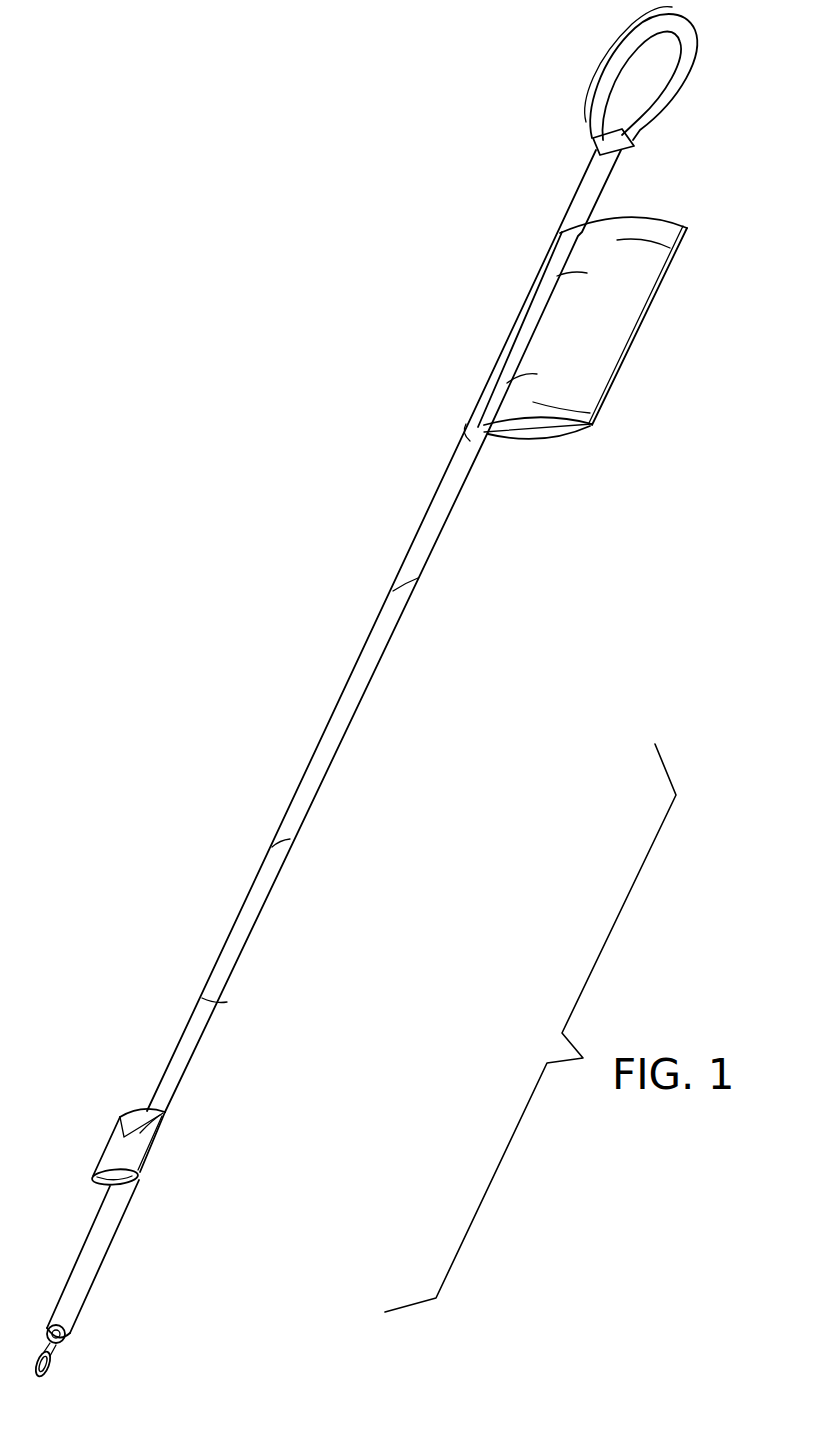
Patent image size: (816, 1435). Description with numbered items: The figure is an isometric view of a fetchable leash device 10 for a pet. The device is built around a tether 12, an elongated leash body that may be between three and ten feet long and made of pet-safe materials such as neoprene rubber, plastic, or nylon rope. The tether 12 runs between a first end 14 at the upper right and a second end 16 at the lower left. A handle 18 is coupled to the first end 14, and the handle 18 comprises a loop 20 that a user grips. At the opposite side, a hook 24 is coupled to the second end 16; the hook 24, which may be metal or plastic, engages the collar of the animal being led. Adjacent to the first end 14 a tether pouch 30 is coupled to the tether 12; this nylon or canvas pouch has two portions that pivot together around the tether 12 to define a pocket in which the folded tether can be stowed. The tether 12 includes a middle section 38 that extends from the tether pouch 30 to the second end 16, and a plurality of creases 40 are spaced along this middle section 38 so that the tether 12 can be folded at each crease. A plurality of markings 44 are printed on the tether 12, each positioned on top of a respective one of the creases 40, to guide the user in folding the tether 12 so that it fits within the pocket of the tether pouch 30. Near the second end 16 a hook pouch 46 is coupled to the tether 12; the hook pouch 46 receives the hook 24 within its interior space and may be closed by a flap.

The fetchable leash device 10 is at (266, 232).
The tether 12 is at (332, 767).
The first end 14 is at (600, 152).
The second end 16 is at (48, 1320).
The handle 18 is at (706, 101).
The loop 20 is at (683, 38).
The hook 24 is at (50, 1371).
The tether pouch 30 is at (570, 352).
The middle section 38 is at (258, 740).
The plurality of creases 40 is at (276, 845).
The plurality of markings 44 is at (413, 580).
The hook pouch 46 is at (138, 1144).